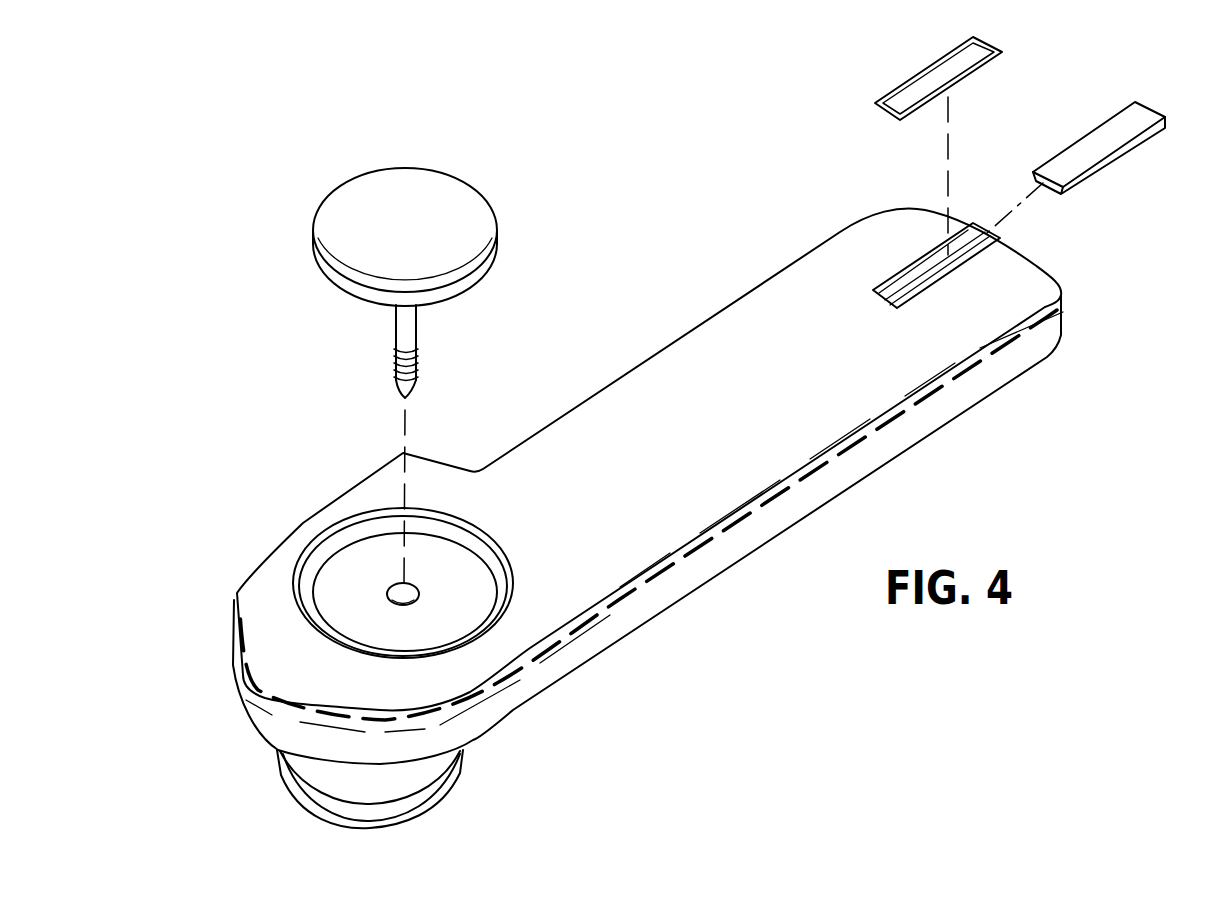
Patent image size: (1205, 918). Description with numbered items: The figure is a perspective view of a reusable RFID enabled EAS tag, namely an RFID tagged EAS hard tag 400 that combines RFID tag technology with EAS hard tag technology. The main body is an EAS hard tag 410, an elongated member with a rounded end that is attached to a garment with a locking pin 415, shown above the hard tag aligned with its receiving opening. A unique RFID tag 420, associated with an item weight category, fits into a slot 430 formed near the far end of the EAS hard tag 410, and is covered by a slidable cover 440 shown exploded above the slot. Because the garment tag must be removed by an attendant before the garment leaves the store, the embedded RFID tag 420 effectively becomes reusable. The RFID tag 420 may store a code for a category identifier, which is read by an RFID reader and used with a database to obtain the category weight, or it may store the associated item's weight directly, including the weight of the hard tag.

The RFID tagged EAS hard tag 400 is at (217, 78).
The EAS hard tag 410 is at (610, 633).
The locking pin 415 is at (415, 184).
The RFID tag 420 is at (927, 63).
The slot 430 is at (990, 229).
The insert block 440 is at (1110, 162).